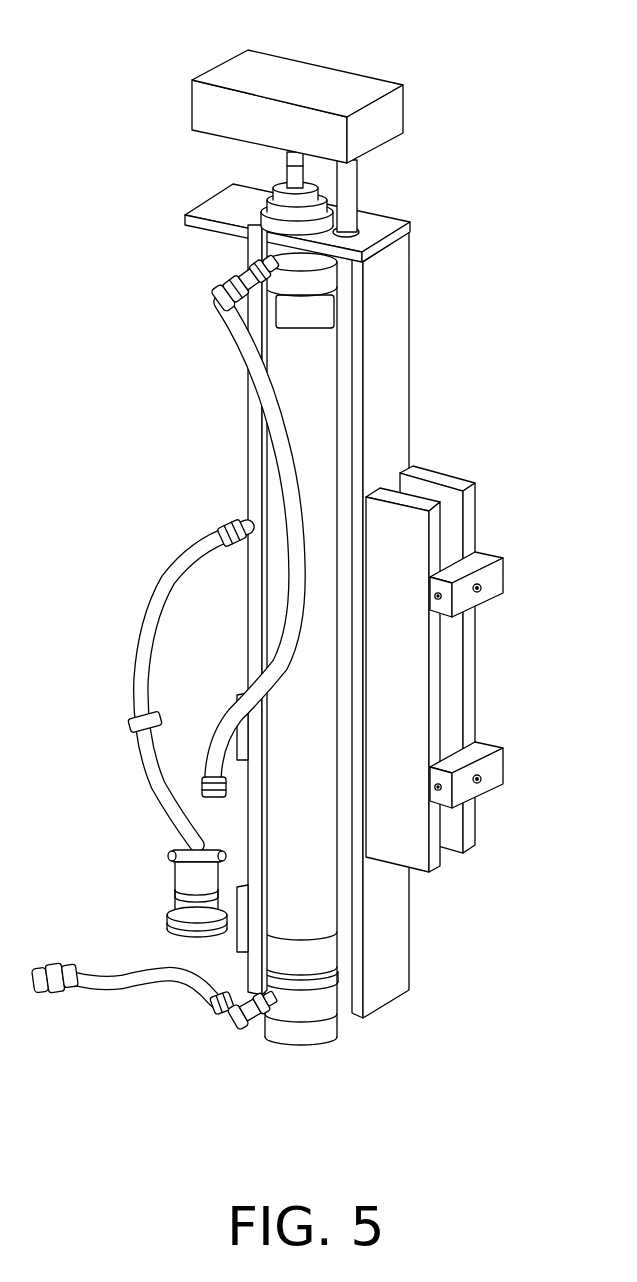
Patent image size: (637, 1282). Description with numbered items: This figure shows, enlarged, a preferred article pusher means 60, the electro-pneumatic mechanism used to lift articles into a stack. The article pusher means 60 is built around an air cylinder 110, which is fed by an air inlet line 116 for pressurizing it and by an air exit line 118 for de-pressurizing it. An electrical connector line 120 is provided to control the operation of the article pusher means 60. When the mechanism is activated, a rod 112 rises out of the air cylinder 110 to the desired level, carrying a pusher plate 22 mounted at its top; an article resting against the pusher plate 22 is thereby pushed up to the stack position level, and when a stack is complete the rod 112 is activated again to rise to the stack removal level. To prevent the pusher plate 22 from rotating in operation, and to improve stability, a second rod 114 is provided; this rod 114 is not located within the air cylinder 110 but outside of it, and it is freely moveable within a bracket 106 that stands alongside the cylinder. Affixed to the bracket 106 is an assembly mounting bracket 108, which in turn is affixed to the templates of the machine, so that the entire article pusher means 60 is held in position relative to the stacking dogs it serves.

The pusher plate 22 is at (347, 70).
The article pusher means 60 is at (248, 432).
The bracket 106 is at (413, 312).
The assembly mounting bracket 108 is at (458, 476).
The air cylinder 110 is at (314, 1041).
The rod 112 is at (285, 161).
The rod 114 is at (358, 190).
The air inlet line 116 is at (220, 1010).
The air exit line 118 is at (238, 268).
The electrical connector line 120 is at (157, 596).